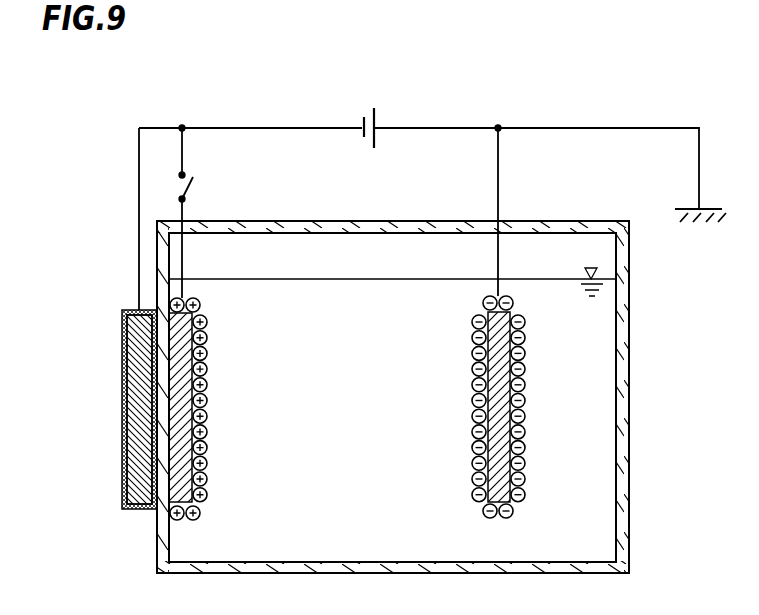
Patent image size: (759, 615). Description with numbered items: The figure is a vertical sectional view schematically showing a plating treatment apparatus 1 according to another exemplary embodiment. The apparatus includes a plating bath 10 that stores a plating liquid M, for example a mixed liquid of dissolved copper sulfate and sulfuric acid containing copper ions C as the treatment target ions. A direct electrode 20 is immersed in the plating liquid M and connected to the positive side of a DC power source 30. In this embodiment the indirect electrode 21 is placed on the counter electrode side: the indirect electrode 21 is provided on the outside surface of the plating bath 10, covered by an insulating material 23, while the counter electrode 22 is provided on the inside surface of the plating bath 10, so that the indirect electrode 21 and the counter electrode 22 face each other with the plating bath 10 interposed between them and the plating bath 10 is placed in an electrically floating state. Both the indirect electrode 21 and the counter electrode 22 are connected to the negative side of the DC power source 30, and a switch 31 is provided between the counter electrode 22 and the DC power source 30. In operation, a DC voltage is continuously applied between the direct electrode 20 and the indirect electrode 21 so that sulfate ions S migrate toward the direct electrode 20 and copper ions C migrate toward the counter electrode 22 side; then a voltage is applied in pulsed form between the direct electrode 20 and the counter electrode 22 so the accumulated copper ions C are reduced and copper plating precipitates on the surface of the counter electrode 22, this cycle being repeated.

The plating treatment apparatus 1 is at (314, 96).
The plating bath 10 is at (623, 415).
The direct electrode 20 is at (504, 402).
The indirect electrode 21 is at (136, 398).
The counter electrode 22 is at (178, 400).
The insulating material 23 is at (118, 506).
The DC power source 30 is at (377, 122).
The switch 31 is at (195, 181).
The plating liquid M is at (603, 327).
The sulfate ions S is at (478, 497).
The copper ions C is at (205, 504).